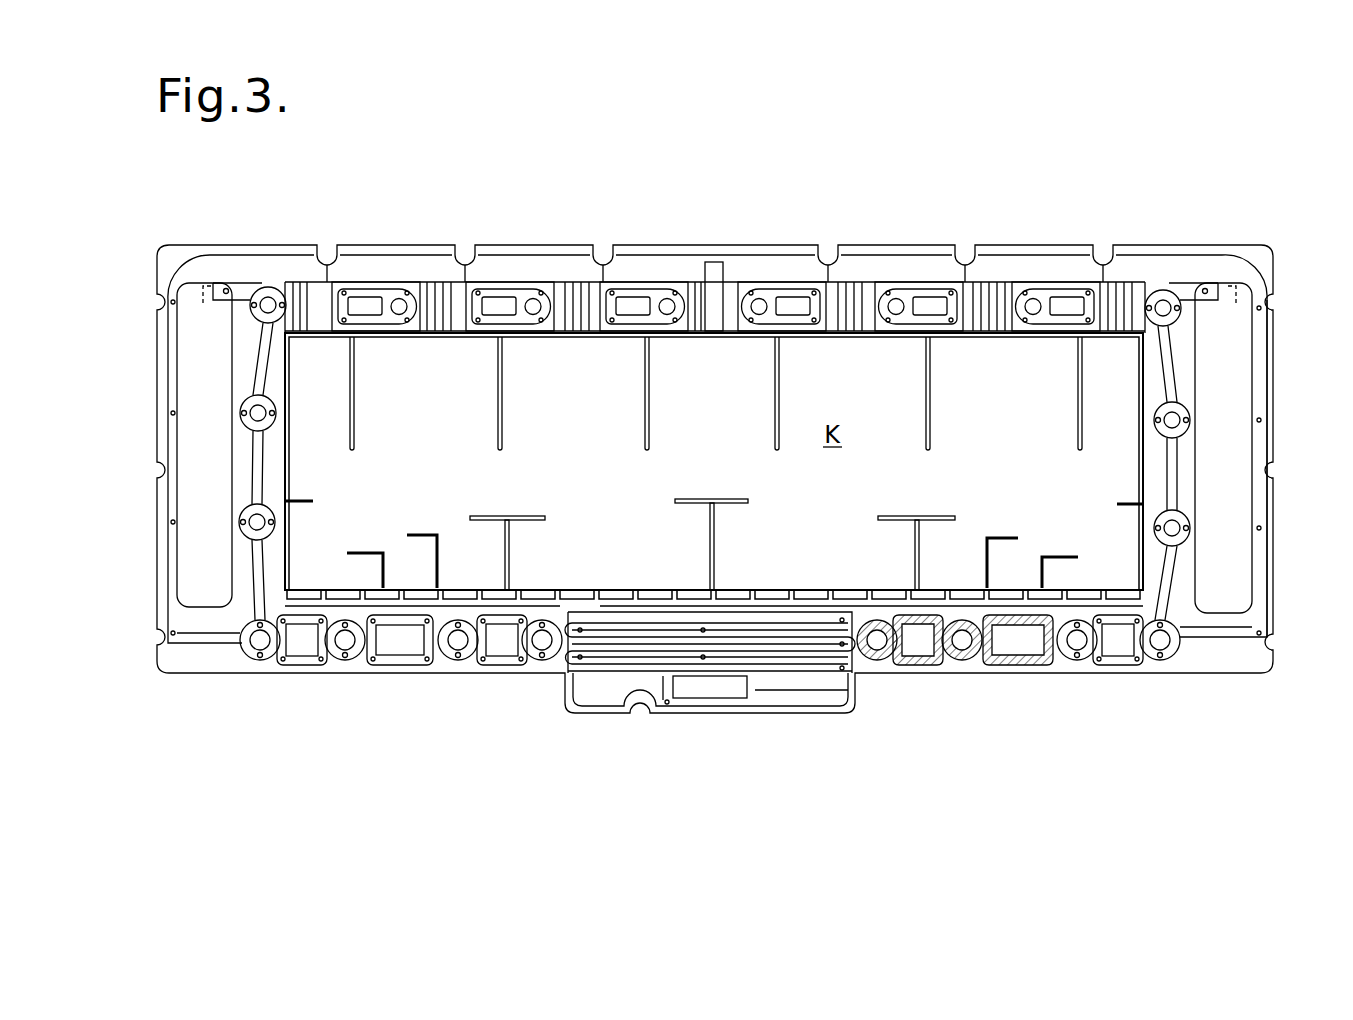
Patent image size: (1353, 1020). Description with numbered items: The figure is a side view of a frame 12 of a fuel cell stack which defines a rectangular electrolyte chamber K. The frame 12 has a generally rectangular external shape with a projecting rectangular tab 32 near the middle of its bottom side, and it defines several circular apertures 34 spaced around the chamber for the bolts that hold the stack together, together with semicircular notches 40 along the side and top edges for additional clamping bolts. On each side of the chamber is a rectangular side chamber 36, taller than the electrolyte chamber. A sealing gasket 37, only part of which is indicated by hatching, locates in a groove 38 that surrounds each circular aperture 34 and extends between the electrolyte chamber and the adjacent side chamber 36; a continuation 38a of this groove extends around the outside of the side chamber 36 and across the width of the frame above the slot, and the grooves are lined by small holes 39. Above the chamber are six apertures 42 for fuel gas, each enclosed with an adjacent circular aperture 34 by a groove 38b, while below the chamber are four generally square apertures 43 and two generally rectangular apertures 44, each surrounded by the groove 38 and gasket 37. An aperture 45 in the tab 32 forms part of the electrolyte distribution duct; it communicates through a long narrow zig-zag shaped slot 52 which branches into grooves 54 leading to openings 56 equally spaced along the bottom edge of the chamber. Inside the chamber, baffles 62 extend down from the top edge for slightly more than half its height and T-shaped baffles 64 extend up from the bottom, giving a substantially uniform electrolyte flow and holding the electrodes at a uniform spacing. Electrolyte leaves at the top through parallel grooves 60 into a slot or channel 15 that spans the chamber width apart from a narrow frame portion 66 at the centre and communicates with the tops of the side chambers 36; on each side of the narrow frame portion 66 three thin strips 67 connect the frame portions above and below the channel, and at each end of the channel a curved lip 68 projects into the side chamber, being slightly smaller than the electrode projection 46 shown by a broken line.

The frame 12 is at (660, 275).
The slot or channel 15 is at (434, 280).
The projecting rectangular tab 32 is at (828, 705).
The circular apertures 34 is at (266, 287).
The rectangular side chambers 36 is at (192, 453).
The sealing gasket 37 is at (1048, 650).
The groove 38 is at (1148, 658).
The continuation of the groove 38a is at (1255, 513).
The groove 38b is at (922, 290).
The small holes 39 is at (479, 287).
The semicircular notches 40 is at (828, 245).
The apertures 42 is at (350, 300).
The generally square apertures 43 is at (497, 648).
The generally rectangular apertures 44 is at (412, 650).
The aperture 45 is at (703, 690).
The projection 46 is at (1235, 273).
The zig-zag shaped slot 52 is at (613, 665).
The grooves 54 is at (328, 606).
The openings 56 is at (686, 590).
The parallel grooves 60 is at (440, 300).
The baffles 62 is at (502, 425).
The T-shaped baffles 64 is at (530, 515).
The narrow frame portion 66 is at (712, 292).
The strips 67 is at (326, 245).
The curved lip 68 is at (214, 288).